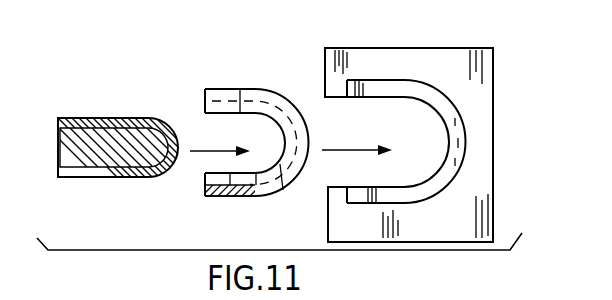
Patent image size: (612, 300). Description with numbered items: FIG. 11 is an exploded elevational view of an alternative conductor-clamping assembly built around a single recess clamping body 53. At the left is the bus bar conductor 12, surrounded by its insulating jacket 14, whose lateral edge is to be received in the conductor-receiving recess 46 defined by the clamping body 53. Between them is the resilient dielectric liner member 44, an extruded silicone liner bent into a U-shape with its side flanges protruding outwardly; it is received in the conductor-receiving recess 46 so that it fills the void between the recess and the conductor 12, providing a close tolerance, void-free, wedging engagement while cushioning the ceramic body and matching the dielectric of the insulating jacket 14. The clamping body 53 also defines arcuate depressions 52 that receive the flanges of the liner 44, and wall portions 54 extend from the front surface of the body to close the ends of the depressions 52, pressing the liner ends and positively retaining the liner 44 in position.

The conductor 12 is at (83, 142).
The insulating jacket 14 is at (147, 120).
The resilient dielectric liner member 44 is at (223, 89).
The conductor-receiving recess 46 is at (331, 99).
The arcuate depressions 52 is at (378, 87).
The single recess clamping body 53 is at (387, 48).
The wall portions 54 is at (328, 213).